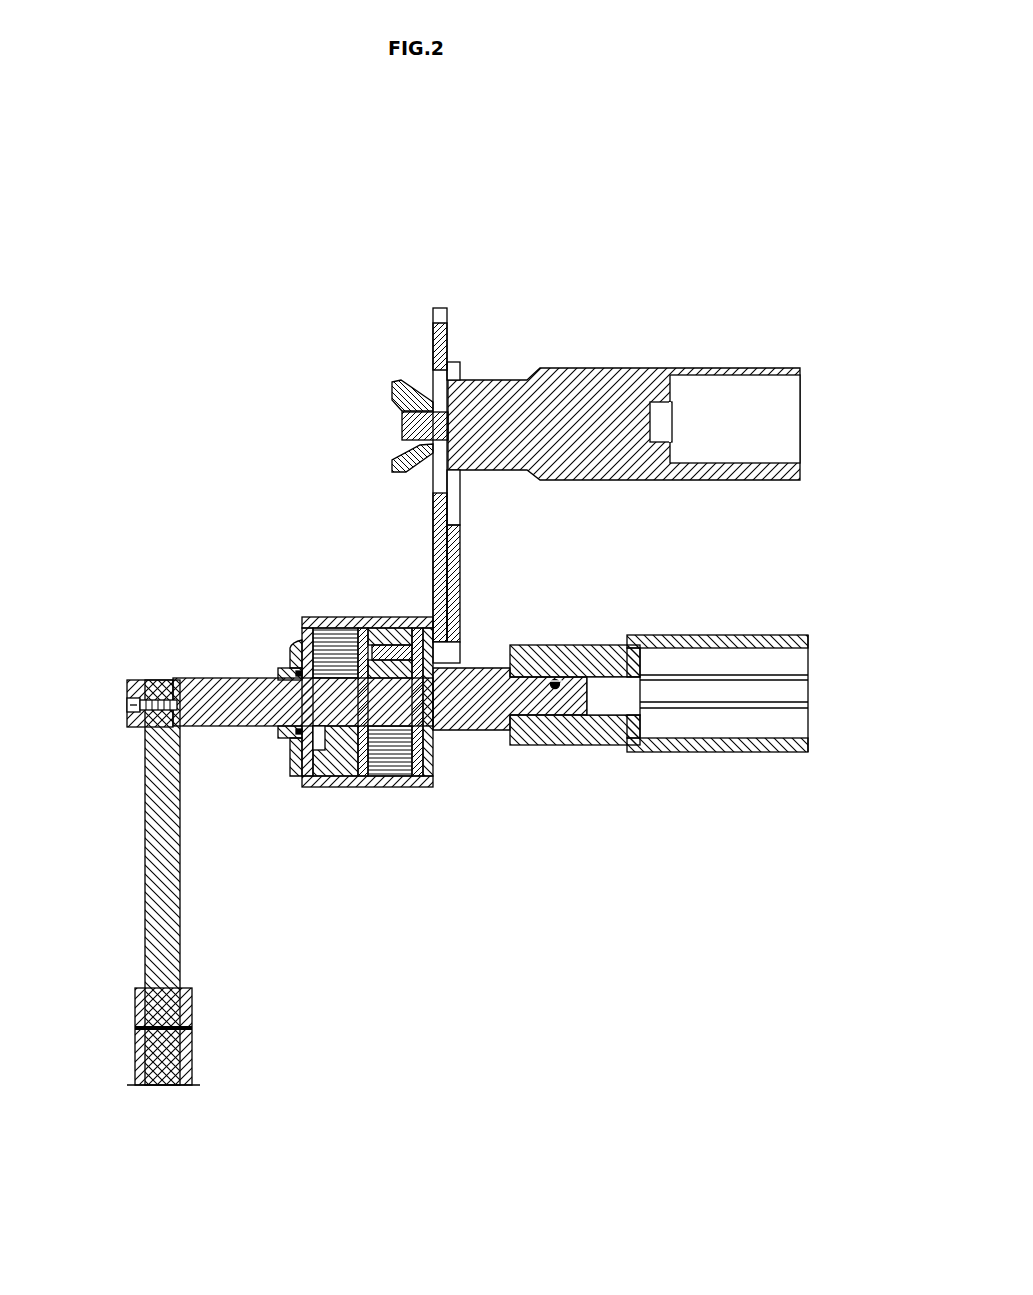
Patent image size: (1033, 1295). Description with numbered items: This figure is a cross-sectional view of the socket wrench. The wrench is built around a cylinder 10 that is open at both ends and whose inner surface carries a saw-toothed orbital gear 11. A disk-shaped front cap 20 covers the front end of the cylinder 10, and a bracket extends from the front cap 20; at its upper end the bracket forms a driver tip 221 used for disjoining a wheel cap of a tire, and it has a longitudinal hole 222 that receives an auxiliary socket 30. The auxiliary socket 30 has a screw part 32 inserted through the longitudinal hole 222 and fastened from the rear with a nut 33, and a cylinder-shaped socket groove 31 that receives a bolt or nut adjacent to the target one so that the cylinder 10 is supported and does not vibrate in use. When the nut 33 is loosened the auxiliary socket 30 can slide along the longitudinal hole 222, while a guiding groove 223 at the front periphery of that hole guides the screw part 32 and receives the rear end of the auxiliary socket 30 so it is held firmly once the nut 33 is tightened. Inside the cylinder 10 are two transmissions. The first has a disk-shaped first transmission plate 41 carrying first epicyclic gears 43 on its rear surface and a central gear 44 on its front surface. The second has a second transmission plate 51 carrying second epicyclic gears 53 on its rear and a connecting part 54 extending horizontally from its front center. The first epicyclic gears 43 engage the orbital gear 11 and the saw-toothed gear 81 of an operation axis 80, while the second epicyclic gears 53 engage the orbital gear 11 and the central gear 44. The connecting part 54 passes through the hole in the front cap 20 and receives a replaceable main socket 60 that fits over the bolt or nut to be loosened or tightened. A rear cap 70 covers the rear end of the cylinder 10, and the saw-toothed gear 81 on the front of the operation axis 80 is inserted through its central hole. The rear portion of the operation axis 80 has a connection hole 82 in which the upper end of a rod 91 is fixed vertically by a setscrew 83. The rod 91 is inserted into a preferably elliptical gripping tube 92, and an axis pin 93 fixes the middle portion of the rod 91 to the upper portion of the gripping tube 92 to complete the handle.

The cylinder 10 is at (385, 788).
The saw-toothed orbital gear 11 is at (400, 788).
The front cap 20 is at (436, 745).
The driver tip 221 is at (443, 318).
The longitudinal hole 222 is at (431, 372).
The guiding groove 223 is at (456, 515).
The auxiliary socket 30 is at (645, 367).
The socket groove 31 is at (783, 399).
The screw part 32 is at (402, 430).
The nut 33 is at (393, 382).
The first transmission plate 41 is at (343, 788).
The first epicyclic gears 43 is at (338, 662).
The central gear 44 is at (480, 664).
The second transmission plate 51 is at (433, 762).
The second epicyclic gears 53 is at (393, 652).
The connecting part 54 is at (565, 646).
The main socket 60 is at (697, 757).
The rear cap 70 is at (300, 670).
The operation axis 80 is at (188, 679).
The saw-toothed gear 81 is at (318, 650).
The connection hole 82 is at (166, 680).
The setscrew 83 is at (127, 703).
The rod 91 is at (143, 833).
The gripping tube 92 is at (193, 1050).
The axis pin 93 is at (193, 1028).